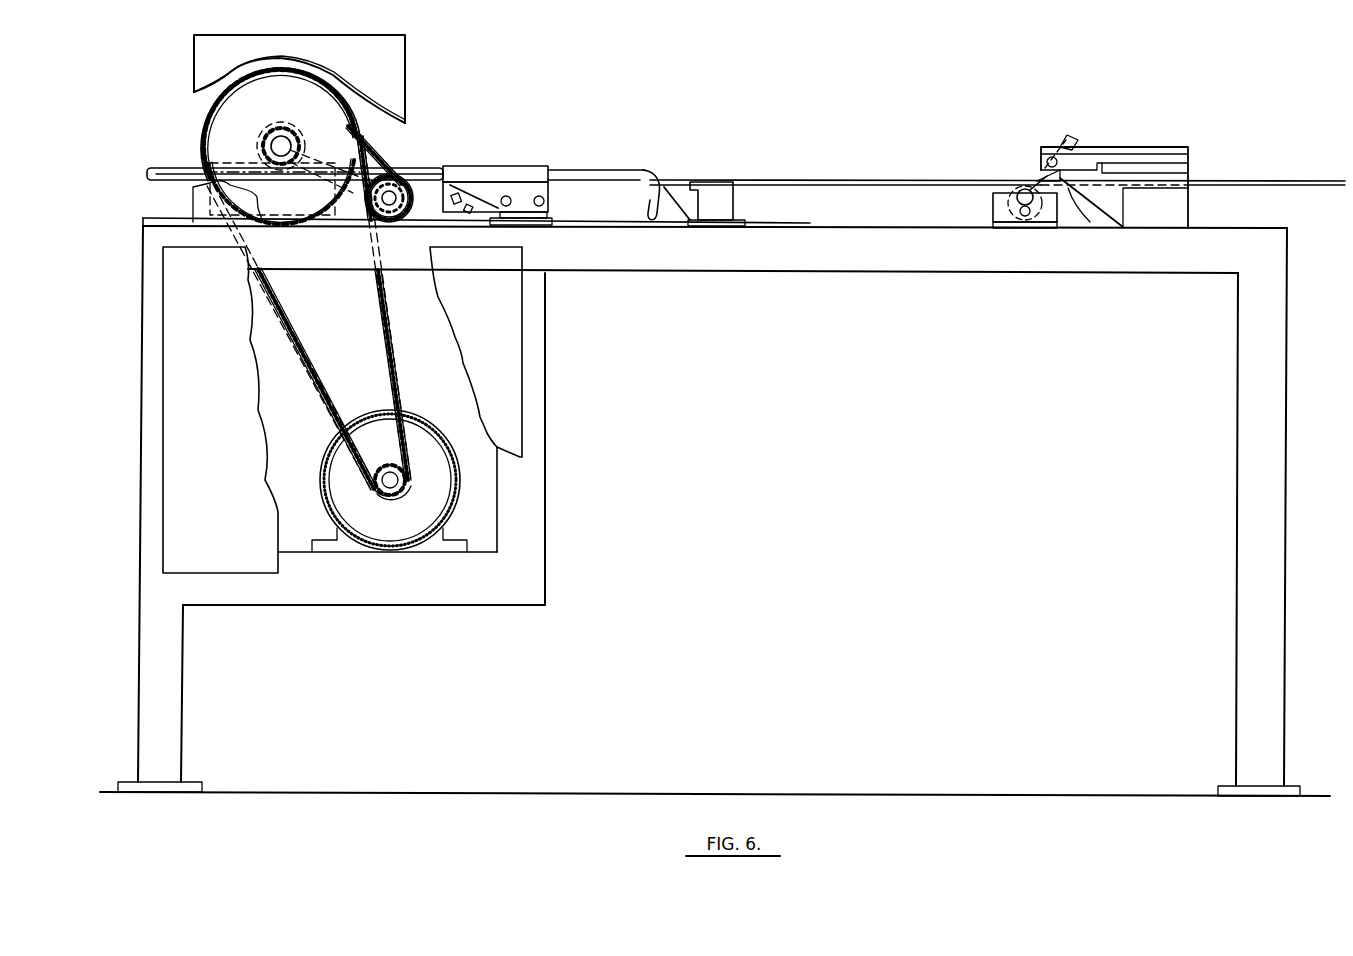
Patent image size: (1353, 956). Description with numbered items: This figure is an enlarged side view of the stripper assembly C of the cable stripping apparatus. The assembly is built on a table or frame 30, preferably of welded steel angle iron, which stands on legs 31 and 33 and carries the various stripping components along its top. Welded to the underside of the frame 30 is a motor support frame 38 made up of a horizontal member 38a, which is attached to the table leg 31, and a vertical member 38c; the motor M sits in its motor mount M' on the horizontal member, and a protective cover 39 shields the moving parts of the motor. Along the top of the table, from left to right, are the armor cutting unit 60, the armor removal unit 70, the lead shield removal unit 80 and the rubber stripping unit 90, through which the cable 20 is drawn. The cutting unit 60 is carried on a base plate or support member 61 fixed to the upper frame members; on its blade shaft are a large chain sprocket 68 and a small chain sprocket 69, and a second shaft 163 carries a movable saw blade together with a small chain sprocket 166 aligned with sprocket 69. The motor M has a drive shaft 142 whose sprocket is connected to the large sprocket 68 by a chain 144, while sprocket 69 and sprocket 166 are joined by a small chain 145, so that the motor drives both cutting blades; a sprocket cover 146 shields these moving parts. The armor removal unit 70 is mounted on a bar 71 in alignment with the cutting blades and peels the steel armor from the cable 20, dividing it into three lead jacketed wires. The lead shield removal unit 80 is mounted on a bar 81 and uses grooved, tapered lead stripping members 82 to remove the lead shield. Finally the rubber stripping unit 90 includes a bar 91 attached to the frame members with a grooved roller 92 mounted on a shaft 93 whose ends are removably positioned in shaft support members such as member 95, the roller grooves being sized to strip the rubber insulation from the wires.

The cable 20 is at (164, 178).
The table or frame 30 is at (925, 286).
The leg 31 is at (168, 707).
The leg 33 is at (1250, 574).
The motor support frame 38 is at (560, 543).
The horizontal member 38a is at (412, 582).
The vertical member 38c is at (545, 418).
The protective cover 39 is at (210, 345).
The armor cutting unit 60 is at (178, 118).
The base plate or support member 61 is at (165, 214).
The large chain sprocket 68 is at (285, 102).
The small chain sprocket 69 is at (284, 135).
The armor removal unit 70 is at (509, 159).
The bar 71 is at (530, 226).
The lead shield removal unit 80 is at (748, 200).
The bar 81 is at (708, 226).
The lead stripping member 82 is at (672, 190).
The rubber stripping unit 90 is at (1113, 134).
The bar 91 is at (1010, 229).
The roller 92 is at (1025, 186).
The shaft 93 is at (1026, 213).
The shaft support member 95 is at (1000, 207).
The drive shaft 142 is at (392, 490).
The chain 144 is at (305, 350).
The small chain 145 is at (372, 166).
The sprocket cover 146 is at (388, 70).
The shaft 163 is at (389, 206).
The small chain sprocket 166 is at (391, 175).
The motor M is at (419, 480).
The motor mount M' is at (389, 561).
The stripper assembly C is at (846, 142).